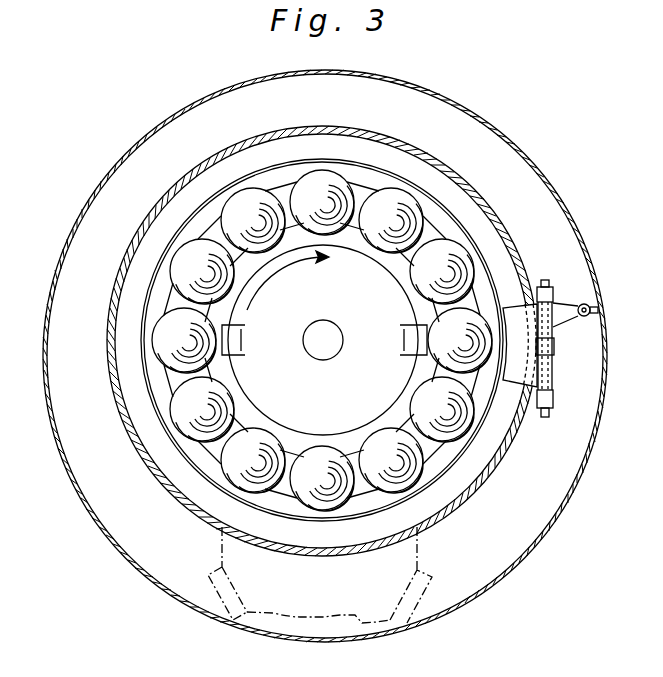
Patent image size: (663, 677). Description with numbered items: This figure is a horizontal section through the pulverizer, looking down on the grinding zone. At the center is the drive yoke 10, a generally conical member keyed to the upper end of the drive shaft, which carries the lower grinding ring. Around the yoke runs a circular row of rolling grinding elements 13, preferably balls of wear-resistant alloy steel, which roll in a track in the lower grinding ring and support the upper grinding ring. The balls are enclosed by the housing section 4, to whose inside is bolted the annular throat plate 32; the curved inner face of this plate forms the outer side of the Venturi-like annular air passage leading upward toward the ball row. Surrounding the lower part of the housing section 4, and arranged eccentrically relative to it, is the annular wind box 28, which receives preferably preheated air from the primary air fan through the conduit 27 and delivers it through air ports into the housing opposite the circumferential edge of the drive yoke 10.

The housing section 4 is at (118, 283).
The drive yoke 10 is at (373, 391).
The rolling grinding elements 13 is at (225, 395).
The conduit 27 is at (430, 590).
The annular wind box 28 is at (96, 376).
The annular throat plate 32 is at (487, 229).